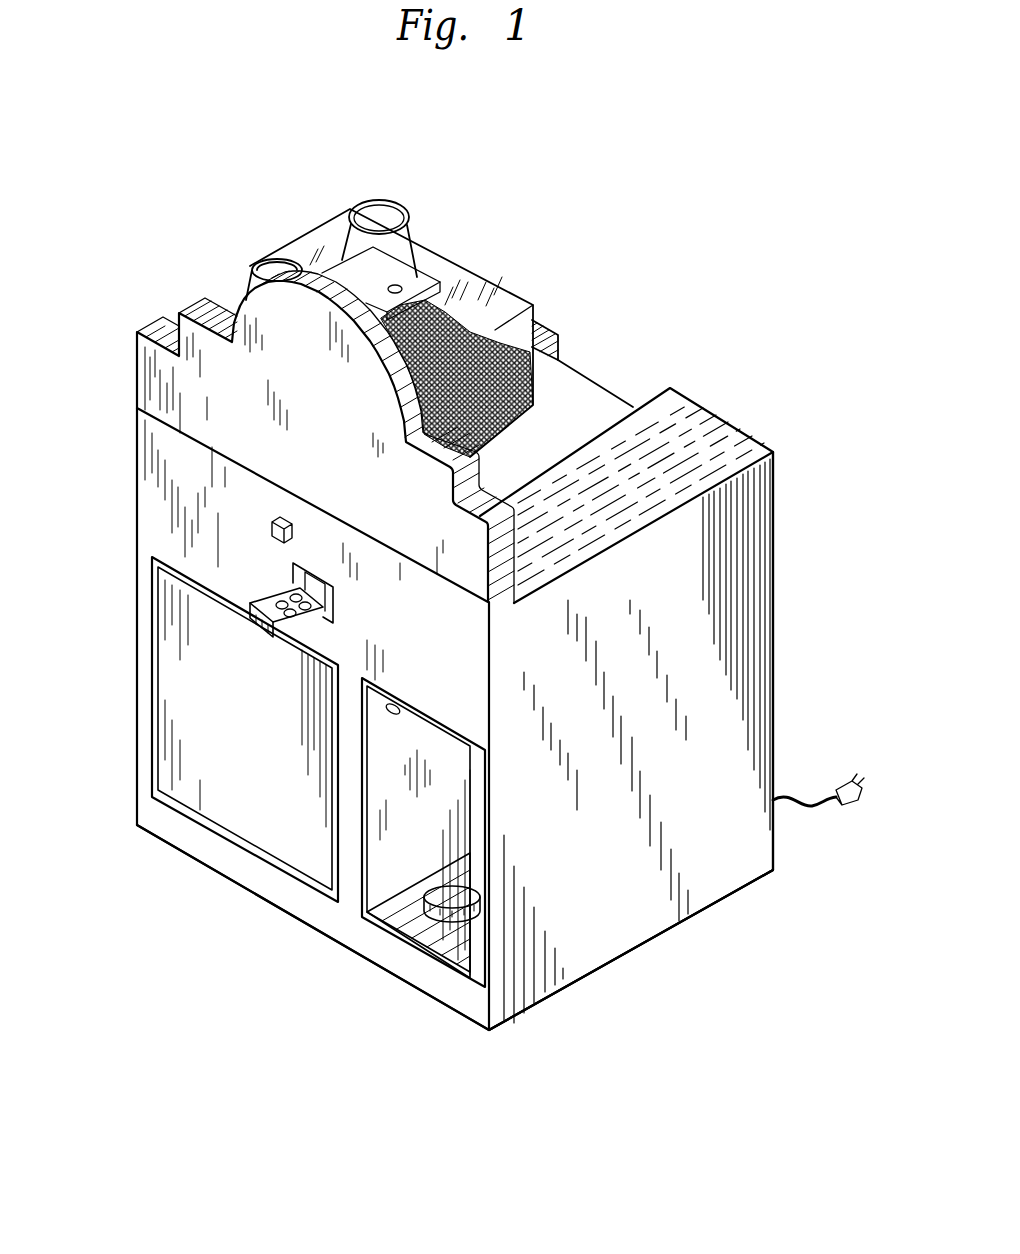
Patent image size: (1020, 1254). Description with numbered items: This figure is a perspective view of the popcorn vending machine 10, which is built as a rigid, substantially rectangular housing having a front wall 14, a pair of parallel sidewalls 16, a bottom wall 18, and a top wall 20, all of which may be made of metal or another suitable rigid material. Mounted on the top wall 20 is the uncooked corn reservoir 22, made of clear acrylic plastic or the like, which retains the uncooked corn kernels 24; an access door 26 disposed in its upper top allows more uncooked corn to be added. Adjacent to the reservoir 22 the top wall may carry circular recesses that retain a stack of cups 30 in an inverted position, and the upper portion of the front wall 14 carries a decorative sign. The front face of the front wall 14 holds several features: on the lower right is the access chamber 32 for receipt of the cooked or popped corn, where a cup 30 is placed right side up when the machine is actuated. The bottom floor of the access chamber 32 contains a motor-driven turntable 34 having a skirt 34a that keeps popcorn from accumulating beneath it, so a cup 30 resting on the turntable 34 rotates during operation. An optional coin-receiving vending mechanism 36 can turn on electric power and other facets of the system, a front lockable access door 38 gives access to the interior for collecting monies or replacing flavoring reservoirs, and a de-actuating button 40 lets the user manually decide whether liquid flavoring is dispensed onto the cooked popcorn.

The popcorn vending machine 10 is at (688, 138).
The front wall 14 is at (146, 438).
The sidewalls 16 is at (745, 605).
The bottom wall 18 is at (468, 1022).
The top wall 20 is at (559, 334).
The uncooked corn reservoir 22 is at (497, 302).
The uncooked corn kernels 24 is at (520, 404).
The access door 26 is at (403, 284).
The cups 30 is at (381, 213).
The access chamber 32 is at (388, 800).
The turntable 34 is at (383, 932).
The skirt 34a is at (427, 950).
The vending mechanism 36 is at (292, 597).
The front lockable access door 38 is at (195, 750).
The de-actuating button 40 is at (270, 520).